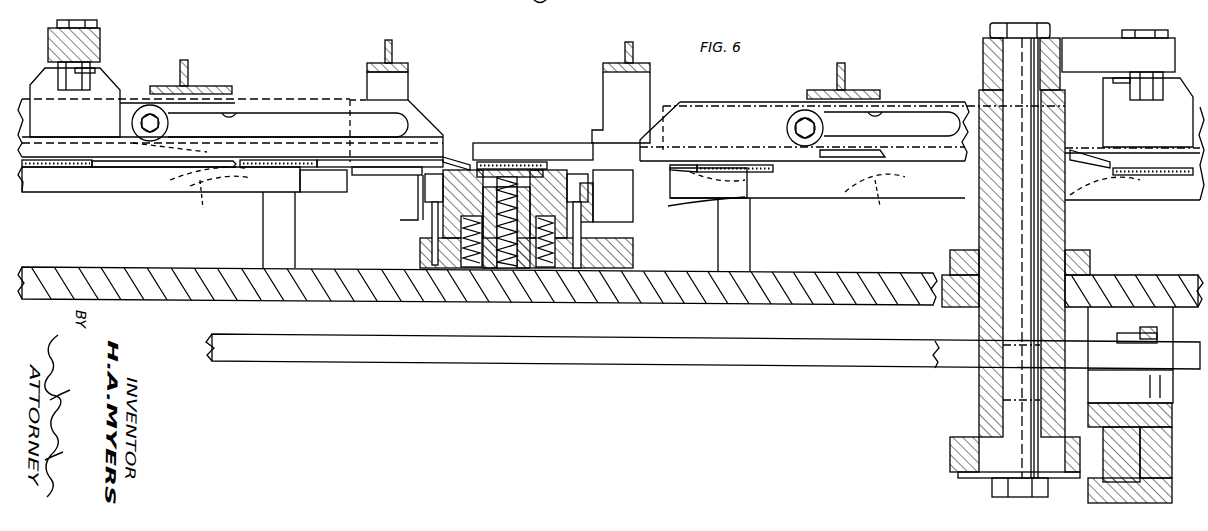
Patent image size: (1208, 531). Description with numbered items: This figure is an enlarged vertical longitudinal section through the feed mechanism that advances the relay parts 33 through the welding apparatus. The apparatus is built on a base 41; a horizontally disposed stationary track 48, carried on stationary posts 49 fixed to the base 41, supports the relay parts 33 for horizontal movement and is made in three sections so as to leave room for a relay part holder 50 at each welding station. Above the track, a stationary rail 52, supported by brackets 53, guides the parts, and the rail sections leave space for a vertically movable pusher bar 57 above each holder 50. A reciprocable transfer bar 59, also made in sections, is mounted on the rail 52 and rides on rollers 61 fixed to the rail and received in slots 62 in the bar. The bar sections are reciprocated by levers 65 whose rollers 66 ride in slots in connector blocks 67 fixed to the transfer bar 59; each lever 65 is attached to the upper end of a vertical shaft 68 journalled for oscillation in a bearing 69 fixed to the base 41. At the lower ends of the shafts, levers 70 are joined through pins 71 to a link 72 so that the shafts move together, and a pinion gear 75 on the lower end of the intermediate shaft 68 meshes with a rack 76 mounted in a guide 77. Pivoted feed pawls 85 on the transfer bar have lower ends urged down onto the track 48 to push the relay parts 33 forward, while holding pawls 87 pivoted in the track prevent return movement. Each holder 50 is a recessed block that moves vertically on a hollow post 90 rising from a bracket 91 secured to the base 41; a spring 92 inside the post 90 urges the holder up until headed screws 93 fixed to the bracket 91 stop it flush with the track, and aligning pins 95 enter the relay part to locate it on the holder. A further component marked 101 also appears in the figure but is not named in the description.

The relay parts 33 is at (88, 170).
The base 41 is at (711, 297).
The track 48 is at (60, 190).
The posts 49 is at (263, 240).
The relay part holder 50 is at (402, 191).
The rail 52 is at (324, 98).
The brackets 53 is at (188, 63).
The pusher bar 57 is at (545, 143).
The transfer bar 59 is at (418, 125).
The rollers 61 is at (150, 117).
The slots 62 is at (235, 110).
The levers 65 is at (80, 46).
The rollers 66 is at (95, 70).
The connector blocks 67 is at (105, 82).
The vertical shaft 68 is at (992, 57).
The bearings 69 is at (1065, 235).
The levers 70 is at (1151, 384).
The pins 71 is at (1127, 334).
The link 72 is at (460, 361).
The pinion gear 75 is at (950, 450).
The rack 76 is at (1131, 446).
The guide 77 is at (1156, 469).
The feed pawls 85 is at (240, 160).
The holding pawls 87 is at (636, 181).
The hollow post 90 is at (472, 268).
The bracket 91 is at (456, 268).
The spring 92 is at (504, 266).
The headed screws 93 is at (432, 228).
The aligning pins 95 is at (486, 162).
The stud 101 is at (398, 65).